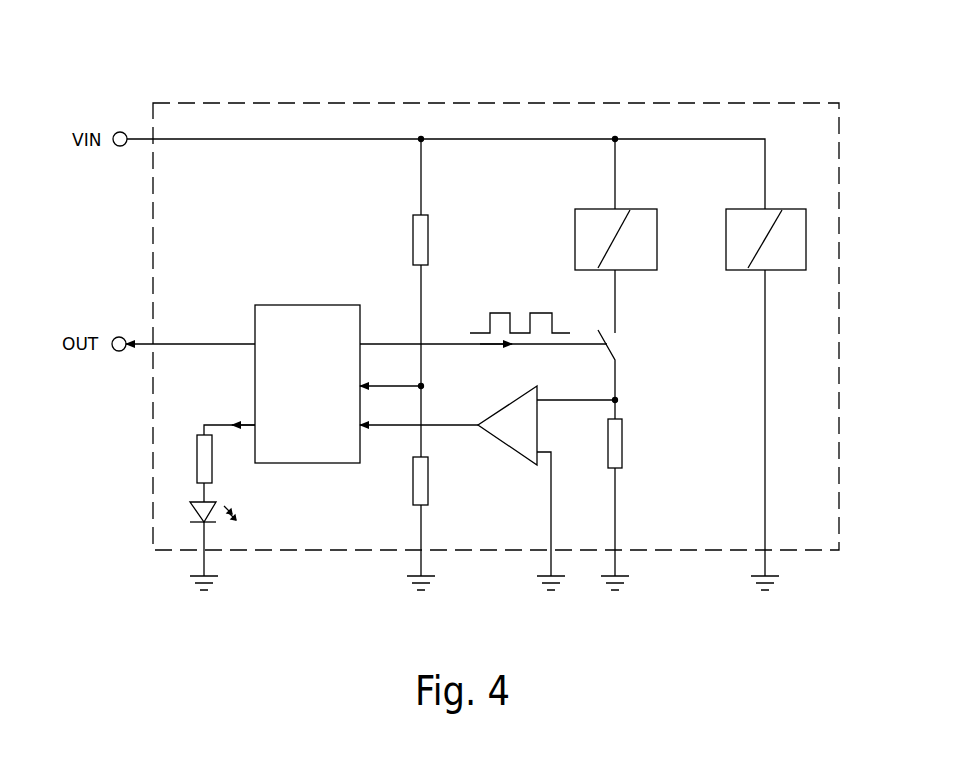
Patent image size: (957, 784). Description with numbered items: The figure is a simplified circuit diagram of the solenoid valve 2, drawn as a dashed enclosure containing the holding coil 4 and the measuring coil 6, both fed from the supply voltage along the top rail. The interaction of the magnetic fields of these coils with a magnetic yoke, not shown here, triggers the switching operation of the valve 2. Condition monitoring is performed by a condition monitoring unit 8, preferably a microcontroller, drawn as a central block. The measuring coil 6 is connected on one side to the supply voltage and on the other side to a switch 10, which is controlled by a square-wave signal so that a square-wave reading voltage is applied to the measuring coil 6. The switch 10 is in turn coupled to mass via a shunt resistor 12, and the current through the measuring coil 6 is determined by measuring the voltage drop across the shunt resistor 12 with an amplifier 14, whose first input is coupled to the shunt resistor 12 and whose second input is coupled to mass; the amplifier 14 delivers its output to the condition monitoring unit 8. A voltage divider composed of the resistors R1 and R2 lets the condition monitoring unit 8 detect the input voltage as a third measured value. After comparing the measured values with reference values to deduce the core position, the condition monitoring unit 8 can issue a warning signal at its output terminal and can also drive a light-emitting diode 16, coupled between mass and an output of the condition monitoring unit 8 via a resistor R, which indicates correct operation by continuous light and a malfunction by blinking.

The solenoid valve 2 is at (620, 103).
The holding coil 4 is at (790, 209).
The measuring coil 6 is at (633, 270).
The condition monitoring unit 8 is at (288, 305).
The switch 10 is at (628, 350).
The shunt resistor 12 is at (622, 440).
The amplifier 14 is at (492, 437).
The light-emitting diode 16 is at (190, 502).
The resistor R is at (197, 445).
The resistor R1 is at (428, 234).
The resistor R2 is at (413, 485).